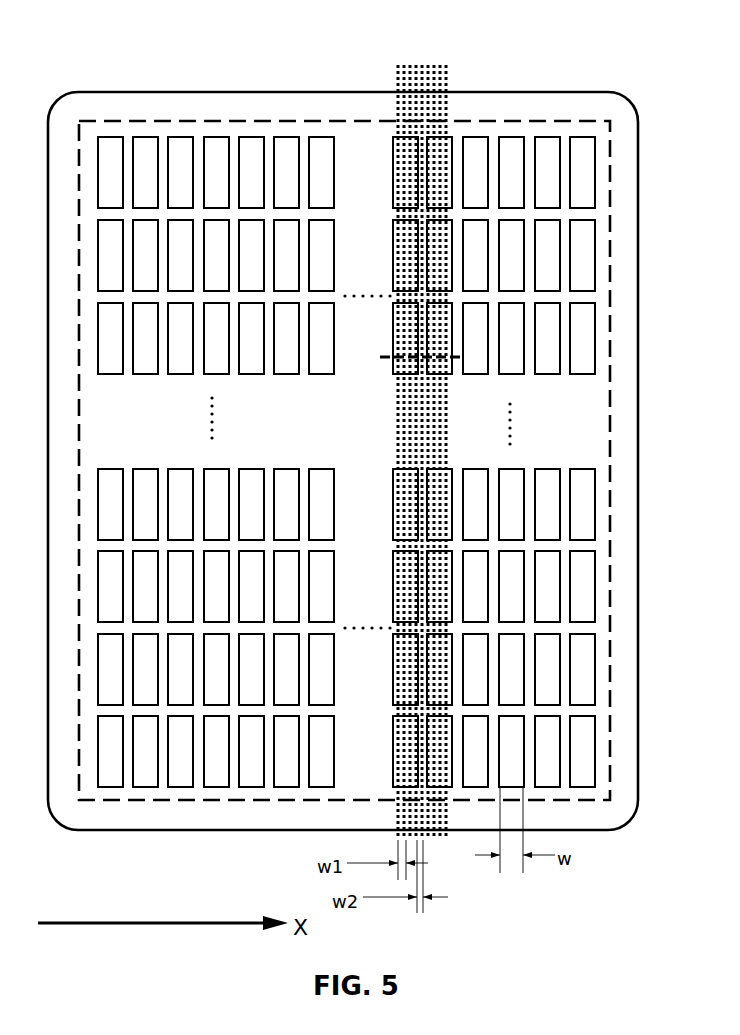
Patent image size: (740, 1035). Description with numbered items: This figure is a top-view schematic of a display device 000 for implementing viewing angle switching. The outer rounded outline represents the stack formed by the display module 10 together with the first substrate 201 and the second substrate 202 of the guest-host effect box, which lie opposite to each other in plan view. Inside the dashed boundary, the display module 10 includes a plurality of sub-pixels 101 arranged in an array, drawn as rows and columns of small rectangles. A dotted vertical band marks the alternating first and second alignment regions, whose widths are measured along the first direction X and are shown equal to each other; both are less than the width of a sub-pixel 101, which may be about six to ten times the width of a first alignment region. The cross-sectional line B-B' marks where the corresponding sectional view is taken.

The display device 000 is at (343, 425).
The display module 10 is at (343, 442).
The first substrate 201 is at (343, 442).
The second substrate 202 is at (620, 47).
The sub-pixel 101 is at (626, 806).